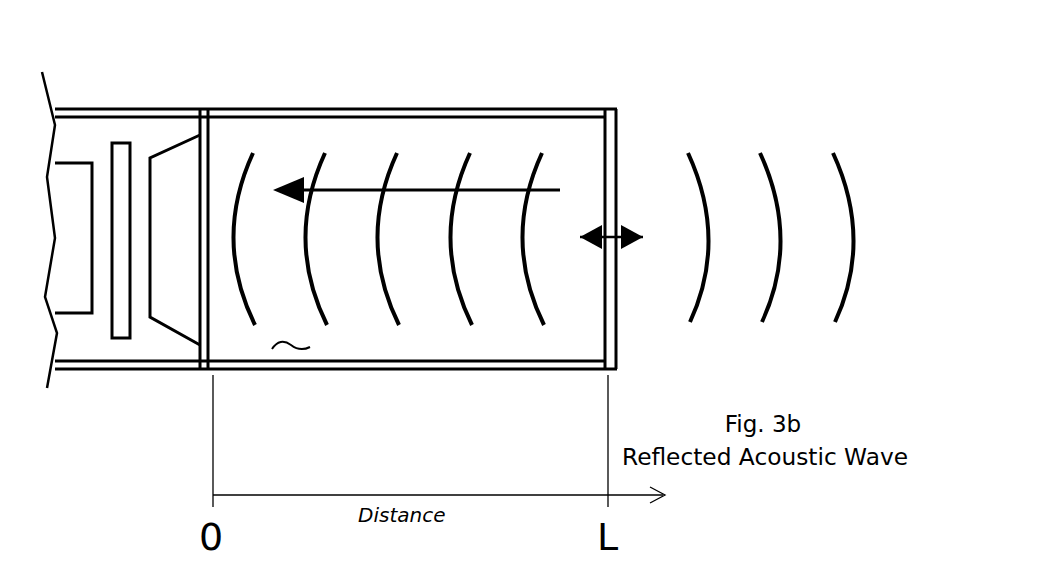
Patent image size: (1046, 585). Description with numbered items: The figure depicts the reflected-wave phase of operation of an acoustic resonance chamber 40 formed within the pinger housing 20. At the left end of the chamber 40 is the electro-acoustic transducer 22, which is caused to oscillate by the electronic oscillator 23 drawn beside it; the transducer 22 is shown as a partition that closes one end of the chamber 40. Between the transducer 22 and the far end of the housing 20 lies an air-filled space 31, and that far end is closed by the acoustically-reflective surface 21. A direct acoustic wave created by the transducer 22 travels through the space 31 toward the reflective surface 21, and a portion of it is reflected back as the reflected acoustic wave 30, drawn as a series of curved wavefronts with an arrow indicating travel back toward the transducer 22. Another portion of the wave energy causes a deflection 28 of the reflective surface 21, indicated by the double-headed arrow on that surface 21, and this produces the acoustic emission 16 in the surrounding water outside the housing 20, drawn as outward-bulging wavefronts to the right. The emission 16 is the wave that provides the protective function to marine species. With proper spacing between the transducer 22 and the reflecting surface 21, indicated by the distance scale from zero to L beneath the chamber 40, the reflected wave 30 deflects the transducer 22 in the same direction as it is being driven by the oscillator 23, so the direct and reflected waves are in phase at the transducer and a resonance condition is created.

The acoustic emission 16 is at (707, 173).
The pinger housing 20 is at (425, 108).
The acoustically-reflective surface 21 is at (618, 152).
The electro-acoustic transducer 22 is at (213, 155).
The electronic oscillator 23 is at (120, 158).
The deflection 28 is at (628, 250).
The reflected acoustic wave 30 is at (332, 303).
The air-filled space 31 is at (292, 352).
The acoustic resonance chamber 40 is at (507, 137).